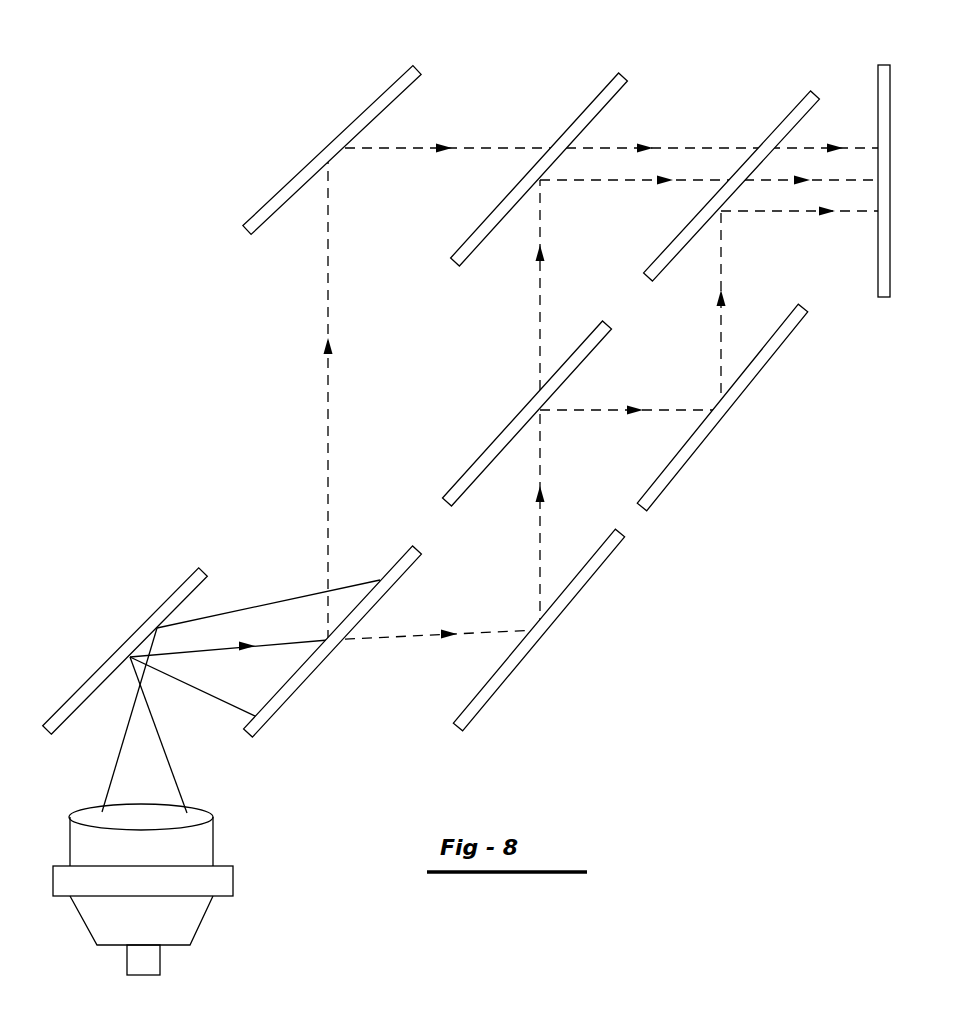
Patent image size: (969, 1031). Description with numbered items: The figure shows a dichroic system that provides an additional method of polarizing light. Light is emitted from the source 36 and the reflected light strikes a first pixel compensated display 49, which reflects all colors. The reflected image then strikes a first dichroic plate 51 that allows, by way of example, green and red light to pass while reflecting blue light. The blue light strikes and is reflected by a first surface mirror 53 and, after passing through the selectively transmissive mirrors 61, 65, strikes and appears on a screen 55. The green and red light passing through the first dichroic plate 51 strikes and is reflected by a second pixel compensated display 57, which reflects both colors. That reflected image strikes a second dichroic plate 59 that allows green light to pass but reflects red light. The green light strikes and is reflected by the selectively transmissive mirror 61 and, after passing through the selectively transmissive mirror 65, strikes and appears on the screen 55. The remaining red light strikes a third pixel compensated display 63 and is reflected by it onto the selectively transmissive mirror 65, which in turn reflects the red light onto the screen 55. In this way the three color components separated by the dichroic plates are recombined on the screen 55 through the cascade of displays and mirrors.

The source 36 is at (193, 847).
The first pixel compensated display 49 is at (105, 667).
The first dichroic plate 51 is at (278, 712).
The first surface mirror 53 is at (358, 116).
The screen 55 is at (878, 98).
The second pixel compensated display 57 is at (485, 710).
The second dichroic plate 59 is at (488, 442).
The selectively transmissive mirror 61 is at (578, 117).
The third pixel compensated display 63 is at (742, 400).
The selectively transmissive mirror 65 is at (770, 128).